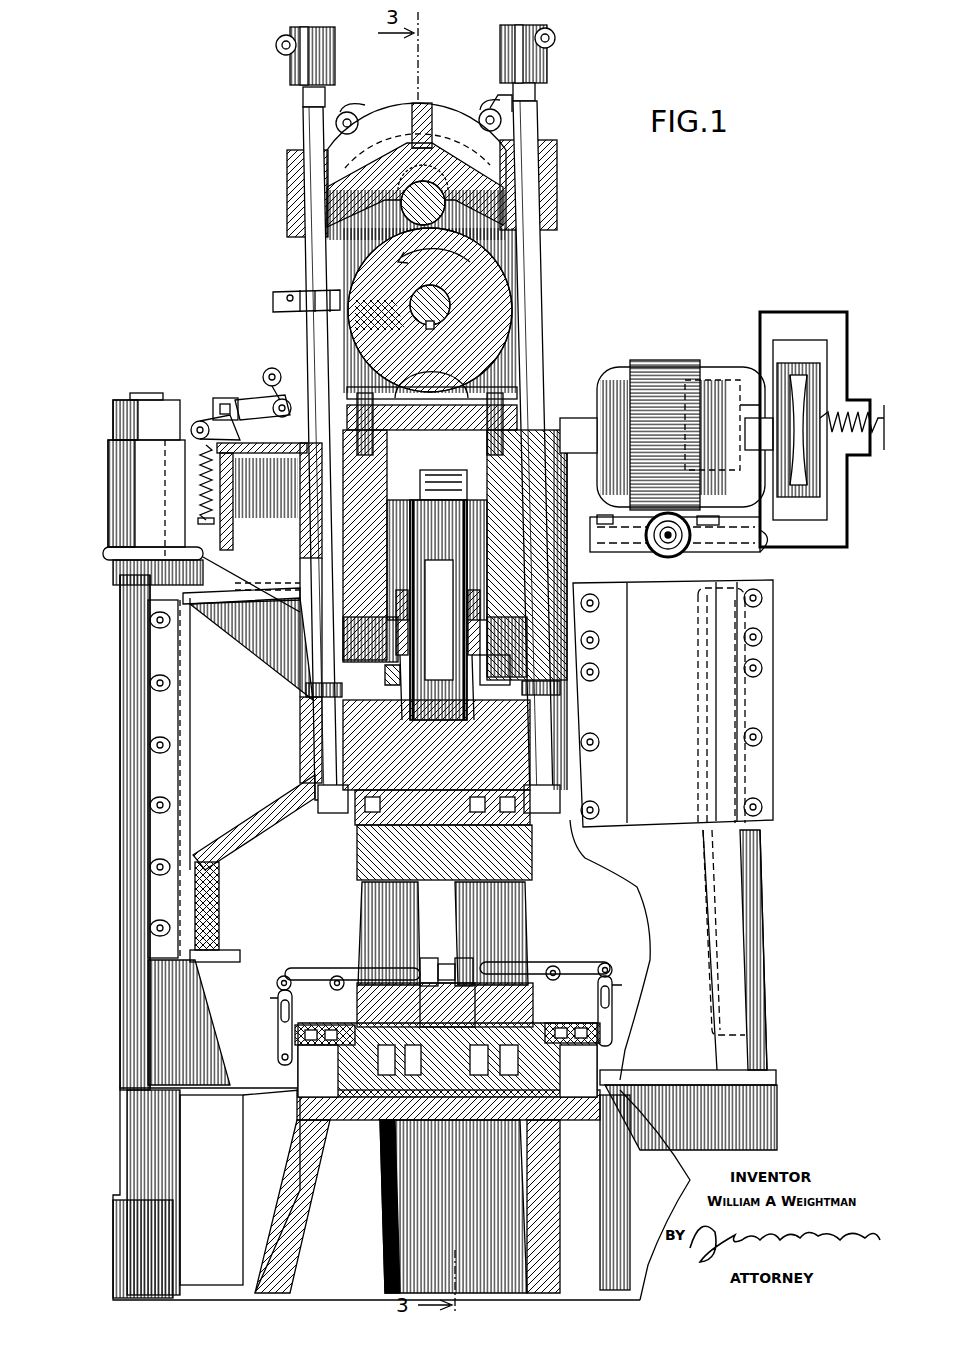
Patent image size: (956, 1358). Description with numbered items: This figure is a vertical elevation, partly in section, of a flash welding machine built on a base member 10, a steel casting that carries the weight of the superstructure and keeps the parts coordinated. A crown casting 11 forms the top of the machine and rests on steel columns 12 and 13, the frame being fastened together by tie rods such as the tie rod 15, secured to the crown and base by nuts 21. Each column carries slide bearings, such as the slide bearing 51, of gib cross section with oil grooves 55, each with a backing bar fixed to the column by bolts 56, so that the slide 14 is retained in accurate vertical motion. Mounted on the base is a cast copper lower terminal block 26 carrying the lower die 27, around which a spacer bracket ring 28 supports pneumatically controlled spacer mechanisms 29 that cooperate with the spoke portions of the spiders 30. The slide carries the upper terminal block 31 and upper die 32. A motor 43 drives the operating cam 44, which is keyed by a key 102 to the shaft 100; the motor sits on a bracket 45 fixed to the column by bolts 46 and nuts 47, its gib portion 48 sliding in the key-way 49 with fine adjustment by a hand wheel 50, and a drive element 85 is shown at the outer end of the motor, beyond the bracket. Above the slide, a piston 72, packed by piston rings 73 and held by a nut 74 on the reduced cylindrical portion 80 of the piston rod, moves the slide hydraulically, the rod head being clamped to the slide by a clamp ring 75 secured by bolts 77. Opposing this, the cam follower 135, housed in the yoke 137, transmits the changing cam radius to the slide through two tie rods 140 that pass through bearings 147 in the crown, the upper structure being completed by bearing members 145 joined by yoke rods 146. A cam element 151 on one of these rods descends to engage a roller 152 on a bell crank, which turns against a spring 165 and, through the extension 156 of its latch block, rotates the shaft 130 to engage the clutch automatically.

The base member 10 is at (376, 1194).
The crown casting 11 is at (145, 486).
The steel column 12 is at (150, 985).
The steel column 13 is at (673, 1060).
The slide 14 is at (252, 656).
The tie rod 15 is at (150, 393).
The nut 21 is at (437, 610).
The lower terminal block 26 is at (470, 1068).
The lower die 27 is at (515, 958).
The spacer bracket ring 28 is at (305, 1065).
The spacer mechanism 29 is at (318, 968).
The spider 30 is at (352, 965).
The upper terminal block 31 is at (350, 832).
The upper die 32 is at (365, 867).
The motor 43 is at (682, 360).
The operating cam 44 is at (515, 258).
The motor bracket 45 is at (673, 703).
The bolts 46 is at (762, 805).
The nuts 47 is at (762, 737).
The gib portion 48 is at (703, 516).
The key-way 49 is at (760, 563).
The hand wheel 50 is at (672, 560).
The slide bearing 51 is at (215, 955).
The oil grooves 55 is at (215, 925).
The bolts 56 is at (150, 803).
The piston 72 is at (380, 488).
The piston rings 73 is at (540, 478).
The nut 74 is at (512, 422).
The clamp ring 75 is at (442, 655).
The bolts 77 is at (455, 670).
The reduced cylindrical portion 80 is at (443, 485).
The pulley 85 is at (800, 355).
The shaft 100 is at (475, 292).
The key 102 is at (440, 300).
The shaft 130 is at (268, 398).
The cam follower 135 is at (418, 130).
The yoke 137 is at (557, 172).
The tie rods 140 is at (312, 122).
The bearing members 145 is at (495, 105).
The yoke rods 146 is at (380, 100).
The bearings 147 is at (305, 580).
The cam element 151 is at (275, 296).
The roller 152 is at (275, 368).
The extension 156 is at (222, 398).
The spring 165 is at (206, 492).